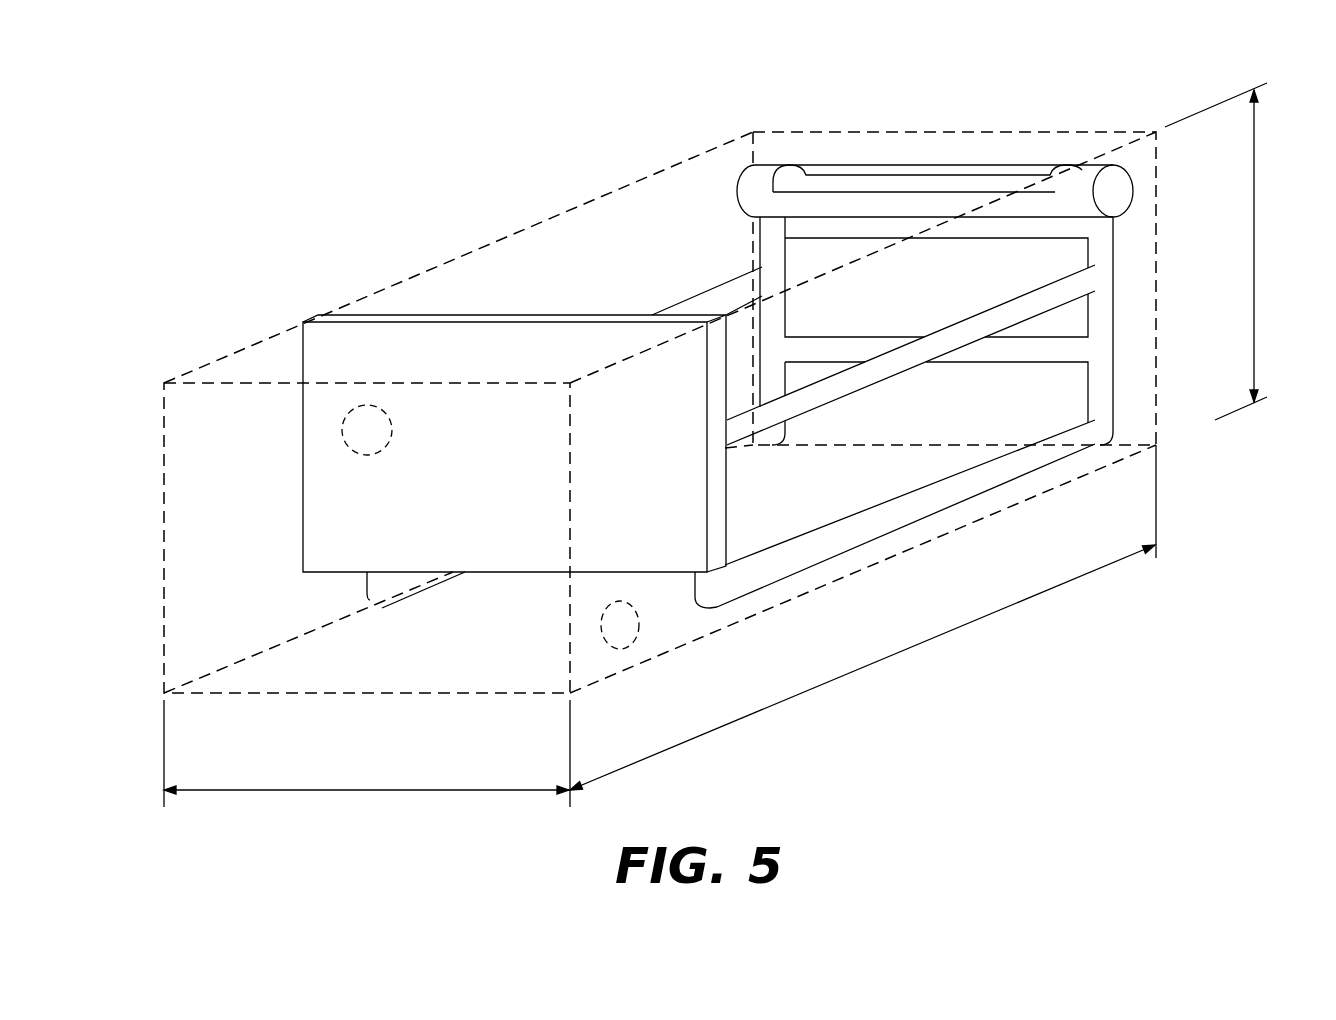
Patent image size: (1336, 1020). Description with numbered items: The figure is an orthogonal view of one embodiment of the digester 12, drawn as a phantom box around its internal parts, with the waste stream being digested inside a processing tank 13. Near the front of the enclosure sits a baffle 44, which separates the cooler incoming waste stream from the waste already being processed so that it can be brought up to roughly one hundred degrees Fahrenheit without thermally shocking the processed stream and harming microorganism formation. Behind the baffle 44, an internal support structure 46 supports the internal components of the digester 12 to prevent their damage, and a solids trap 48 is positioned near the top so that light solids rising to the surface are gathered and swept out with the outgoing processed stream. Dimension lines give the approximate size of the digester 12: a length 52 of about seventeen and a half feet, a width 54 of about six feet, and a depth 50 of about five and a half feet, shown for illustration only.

The digester 12 is at (345, 120).
The processing tank 13 is at (857, 493).
The baffle 44 is at (595, 333).
The internal support structure 46 is at (703, 298).
The solids trap 48 is at (878, 180).
The depth 50 is at (1255, 158).
The length 52 is at (1018, 602).
The width 54 is at (223, 790).